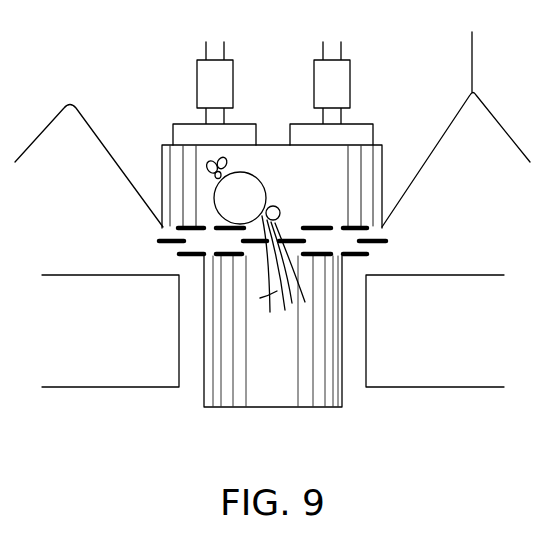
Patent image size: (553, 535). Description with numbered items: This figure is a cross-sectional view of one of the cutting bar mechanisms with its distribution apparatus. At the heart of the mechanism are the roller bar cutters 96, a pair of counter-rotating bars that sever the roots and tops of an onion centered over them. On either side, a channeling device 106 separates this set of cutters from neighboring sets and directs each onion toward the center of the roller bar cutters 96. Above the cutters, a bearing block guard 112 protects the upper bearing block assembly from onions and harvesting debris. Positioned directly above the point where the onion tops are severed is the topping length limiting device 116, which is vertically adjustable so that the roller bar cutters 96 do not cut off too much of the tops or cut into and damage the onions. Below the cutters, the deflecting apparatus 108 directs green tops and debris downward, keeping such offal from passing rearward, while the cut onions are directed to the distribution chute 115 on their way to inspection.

The roller bar cutters 96 is at (162, 244).
The channeling device 106 is at (118, 160).
The deflecting apparatus 108 is at (263, 373).
The bearing block guard 112 is at (332, 177).
The distribution chute 115 is at (426, 316).
The topping length limiting device 116 is at (277, 205).